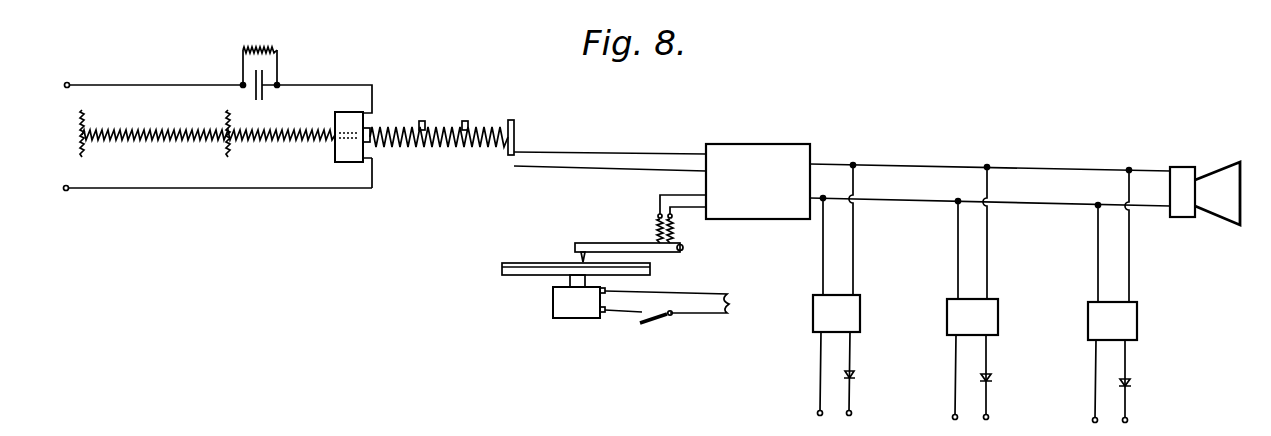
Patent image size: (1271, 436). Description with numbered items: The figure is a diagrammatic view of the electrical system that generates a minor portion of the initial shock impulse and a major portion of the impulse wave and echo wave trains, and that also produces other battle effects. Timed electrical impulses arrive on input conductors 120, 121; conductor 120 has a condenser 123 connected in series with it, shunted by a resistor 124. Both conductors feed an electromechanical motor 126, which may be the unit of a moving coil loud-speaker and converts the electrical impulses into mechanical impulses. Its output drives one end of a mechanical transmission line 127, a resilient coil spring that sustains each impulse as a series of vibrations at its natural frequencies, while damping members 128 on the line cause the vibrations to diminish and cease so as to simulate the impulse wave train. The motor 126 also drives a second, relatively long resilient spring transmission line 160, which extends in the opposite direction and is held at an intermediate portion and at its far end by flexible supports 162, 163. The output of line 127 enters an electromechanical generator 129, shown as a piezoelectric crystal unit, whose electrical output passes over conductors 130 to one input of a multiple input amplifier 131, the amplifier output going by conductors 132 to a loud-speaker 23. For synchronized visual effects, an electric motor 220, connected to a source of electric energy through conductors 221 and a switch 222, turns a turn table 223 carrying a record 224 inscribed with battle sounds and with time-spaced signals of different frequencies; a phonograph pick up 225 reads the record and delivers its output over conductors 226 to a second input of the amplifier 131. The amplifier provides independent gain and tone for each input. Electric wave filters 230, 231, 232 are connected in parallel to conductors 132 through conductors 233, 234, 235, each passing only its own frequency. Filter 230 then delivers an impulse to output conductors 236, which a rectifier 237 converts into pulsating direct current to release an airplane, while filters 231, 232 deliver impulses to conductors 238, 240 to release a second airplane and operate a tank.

The loud-speaker 23 is at (1182, 172).
The input conductor 120 is at (65, 83).
The input conductor 121 is at (64, 186).
The condenser 123 is at (264, 80).
The resistor 124 is at (264, 50).
The electromechanical motor 126 is at (337, 118).
The mechanical transmission line 127 is at (443, 146).
The damping members 128 is at (465, 120).
The electromechanical generator 129 is at (516, 123).
The conductors 130 is at (632, 168).
The multiple input amplifier 131 is at (770, 139).
The conductors 132 is at (915, 202).
The second resilient spring transmission line 160 is at (158, 142).
The flexible support 162 is at (78, 148).
The flexible support 163 is at (226, 155).
The electric motor 220 is at (573, 305).
The conductors 221 is at (684, 290).
The switch 222 is at (657, 323).
The turn table 223 is at (509, 275).
The record 224 is at (528, 250).
The phonograph pick up 225 is at (611, 238).
The conductors 226 is at (688, 207).
The electric wave filter 230 is at (848, 318).
The electric wave filter 231 is at (985, 323).
The electric wave filter 232 is at (1127, 328).
The conductors 233 is at (823, 233).
The conductors 234 is at (987, 263).
The conductors 235 is at (1098, 272).
The output conductors 236 is at (853, 357).
The rectifier 237 is at (858, 374).
The conductors 238 is at (955, 397).
The conductors 240 is at (1125, 410).